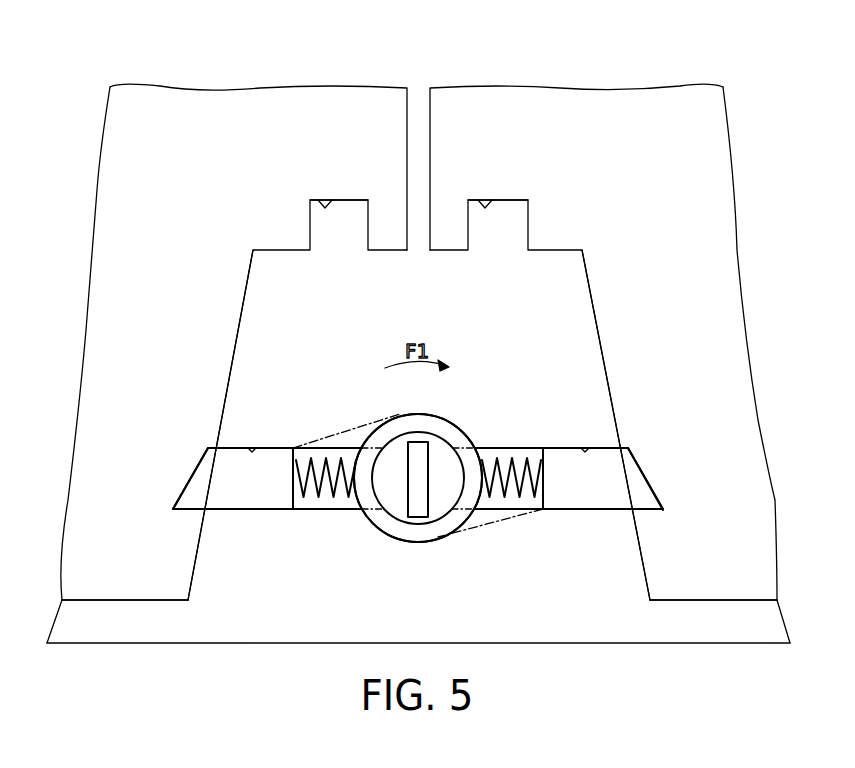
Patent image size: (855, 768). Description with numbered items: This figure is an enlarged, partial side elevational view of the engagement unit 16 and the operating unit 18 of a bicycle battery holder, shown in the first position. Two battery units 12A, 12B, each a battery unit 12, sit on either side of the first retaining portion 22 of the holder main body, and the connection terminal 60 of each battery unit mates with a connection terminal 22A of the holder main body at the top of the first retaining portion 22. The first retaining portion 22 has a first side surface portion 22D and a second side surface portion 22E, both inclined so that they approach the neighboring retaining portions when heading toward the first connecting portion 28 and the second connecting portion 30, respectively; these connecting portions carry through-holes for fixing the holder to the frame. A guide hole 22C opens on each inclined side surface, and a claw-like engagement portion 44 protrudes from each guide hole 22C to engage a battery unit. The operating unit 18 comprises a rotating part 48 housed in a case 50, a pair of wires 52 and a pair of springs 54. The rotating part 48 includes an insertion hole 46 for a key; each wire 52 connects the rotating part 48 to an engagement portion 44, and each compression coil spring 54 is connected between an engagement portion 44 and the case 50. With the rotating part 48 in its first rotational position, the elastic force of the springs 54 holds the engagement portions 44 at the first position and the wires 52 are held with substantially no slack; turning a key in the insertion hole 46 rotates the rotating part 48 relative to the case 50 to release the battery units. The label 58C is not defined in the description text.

The battery unit 12 is at (748, 78).
The battery unit 12A is at (593, 90).
The battery unit 12B is at (243, 90).
The engagement unit 16 is at (677, 423).
The operating unit 18 is at (460, 402).
The first retaining portion 22 is at (590, 294).
The connection terminal 22A is at (356, 200).
The guide hole 22C is at (252, 448).
The first side surface portion 22D is at (600, 339).
The second side surface portion 22E is at (238, 340).
The first connecting portion 28 is at (712, 600).
The second connecting portion 30 is at (120, 600).
The engagement portion 44 is at (192, 477).
The insertion hole 46 is at (414, 444).
The rotating part 48 is at (418, 525).
The case 50 is at (396, 416).
The wire 52 is at (322, 448).
The spring 54 is at (510, 460).
The corner portion 58C is at (209, 450).
The connection terminal 60 is at (323, 200).